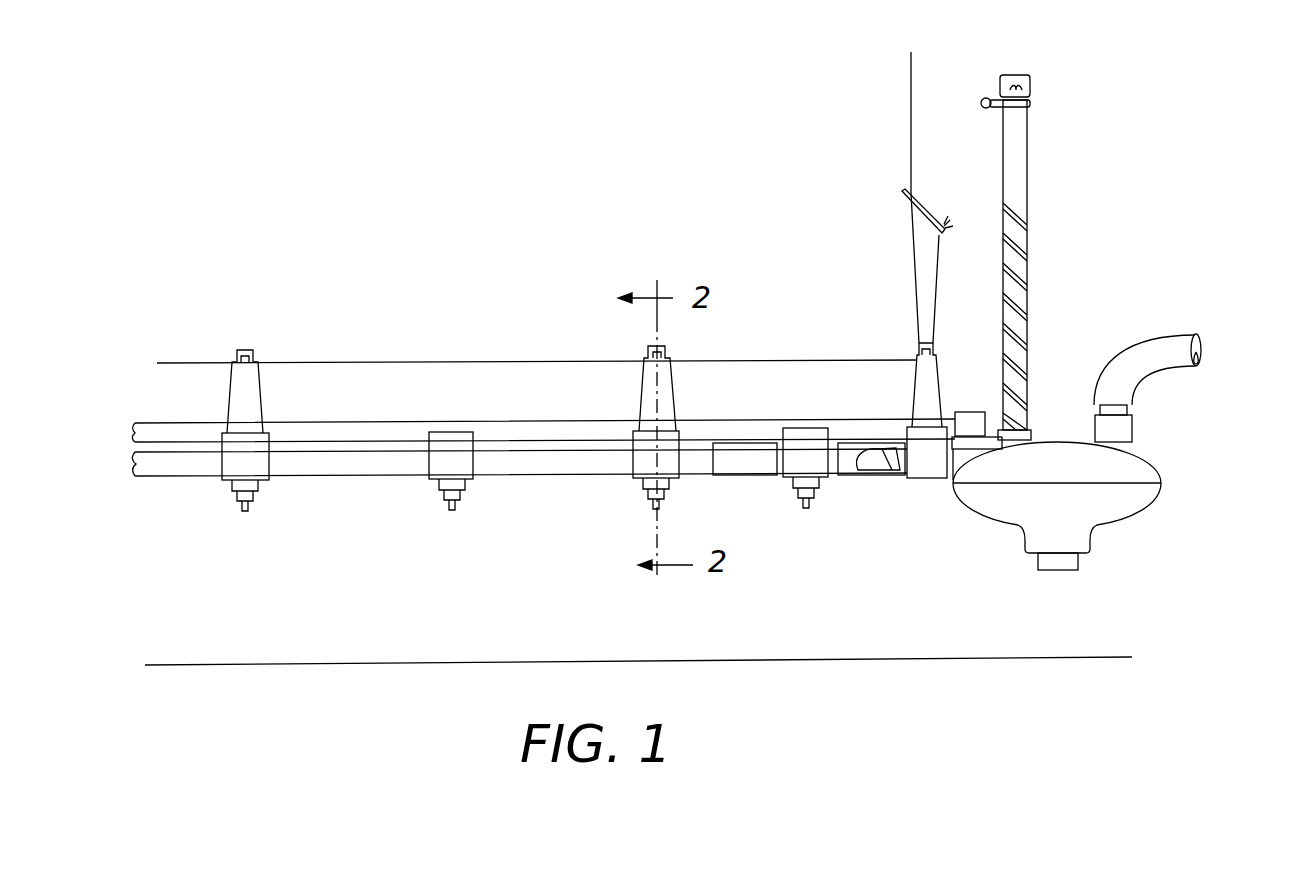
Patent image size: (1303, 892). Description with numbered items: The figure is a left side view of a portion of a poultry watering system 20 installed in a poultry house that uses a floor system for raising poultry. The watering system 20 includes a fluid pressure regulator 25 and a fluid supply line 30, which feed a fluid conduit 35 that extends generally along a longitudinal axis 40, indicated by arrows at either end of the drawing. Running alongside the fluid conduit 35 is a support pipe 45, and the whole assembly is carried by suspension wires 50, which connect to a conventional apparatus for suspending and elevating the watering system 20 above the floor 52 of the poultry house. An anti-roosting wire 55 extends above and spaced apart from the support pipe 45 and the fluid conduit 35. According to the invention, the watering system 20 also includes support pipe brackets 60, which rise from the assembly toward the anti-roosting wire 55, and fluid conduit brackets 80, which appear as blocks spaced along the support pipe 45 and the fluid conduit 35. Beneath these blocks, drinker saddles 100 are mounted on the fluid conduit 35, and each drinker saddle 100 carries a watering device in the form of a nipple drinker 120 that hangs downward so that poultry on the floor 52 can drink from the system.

The watering system 20 is at (741, 130).
The fluid pressure regulator 25 is at (1100, 500).
The fluid supply line 30 is at (1158, 355).
The fluid conduit 35 is at (320, 474).
The longitudinal axis 40 is at (50, 447).
The support pipe 45 is at (518, 432).
The suspension wires 50 is at (911, 138).
The floor 52 is at (797, 661).
The anti-roosting wire 55 is at (787, 361).
The support pipe brackets 60 is at (238, 401).
The fluid conduit brackets 80 is at (248, 452).
The drinker saddles 100 is at (237, 482).
The nipple drinkers 120 is at (247, 506).